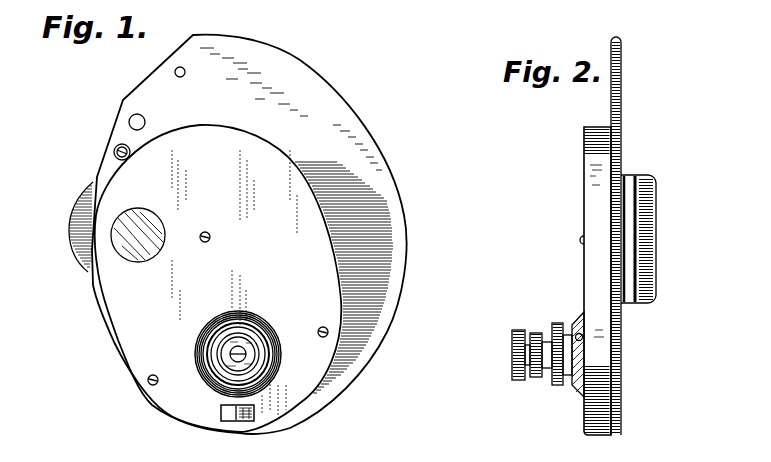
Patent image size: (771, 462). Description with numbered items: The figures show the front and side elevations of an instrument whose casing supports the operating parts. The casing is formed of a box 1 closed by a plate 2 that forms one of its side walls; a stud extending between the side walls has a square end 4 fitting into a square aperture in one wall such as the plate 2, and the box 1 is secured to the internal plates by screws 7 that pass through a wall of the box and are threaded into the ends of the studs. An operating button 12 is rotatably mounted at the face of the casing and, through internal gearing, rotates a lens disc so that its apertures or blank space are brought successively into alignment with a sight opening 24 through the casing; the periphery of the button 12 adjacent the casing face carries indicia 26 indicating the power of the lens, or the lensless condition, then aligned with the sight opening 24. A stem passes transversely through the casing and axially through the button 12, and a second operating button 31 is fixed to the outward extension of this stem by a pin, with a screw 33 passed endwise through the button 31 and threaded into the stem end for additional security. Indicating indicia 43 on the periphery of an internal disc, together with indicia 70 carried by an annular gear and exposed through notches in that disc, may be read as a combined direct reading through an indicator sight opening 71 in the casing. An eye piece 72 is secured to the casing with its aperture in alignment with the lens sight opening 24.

In FIG. 1, the box 1 is at (218, 278).
In FIG. 2, the box 1 is at (583, 178).
In FIG. 1, the plate 2 is at (382, 173).
In FIG. 2, the plate 2 is at (621, 108).
In FIG. 1, the square end 4 is at (193, 453).
In FIG. 1, the screws 7 is at (210, 236).
In FIG. 2, the screws 7 is at (580, 240).
In FIG. 1, the operating button 12 is at (213, 318).
In FIG. 2, the operating button 12 is at (583, 392).
In FIG. 1, the sight opening 24 is at (157, 223).
In FIG. 1, the indicia 26 is at (250, 313).
In FIG. 2, the indicia 26 is at (570, 384).
In FIG. 1, the operating button 31 is at (217, 365).
In FIG. 2, the operating button 31 is at (512, 375).
In FIG. 1, the screw 33 is at (246, 355).
In FIG. 1, the indicating indicia 43 is at (222, 420).
In FIG. 1, the indicia 70 is at (248, 421).
In FIG. 1, the indicator sight opening 71 is at (252, 421).
In FIG. 1, the eye piece 72 is at (70, 240).
In FIG. 2, the eye piece 72 is at (657, 234).